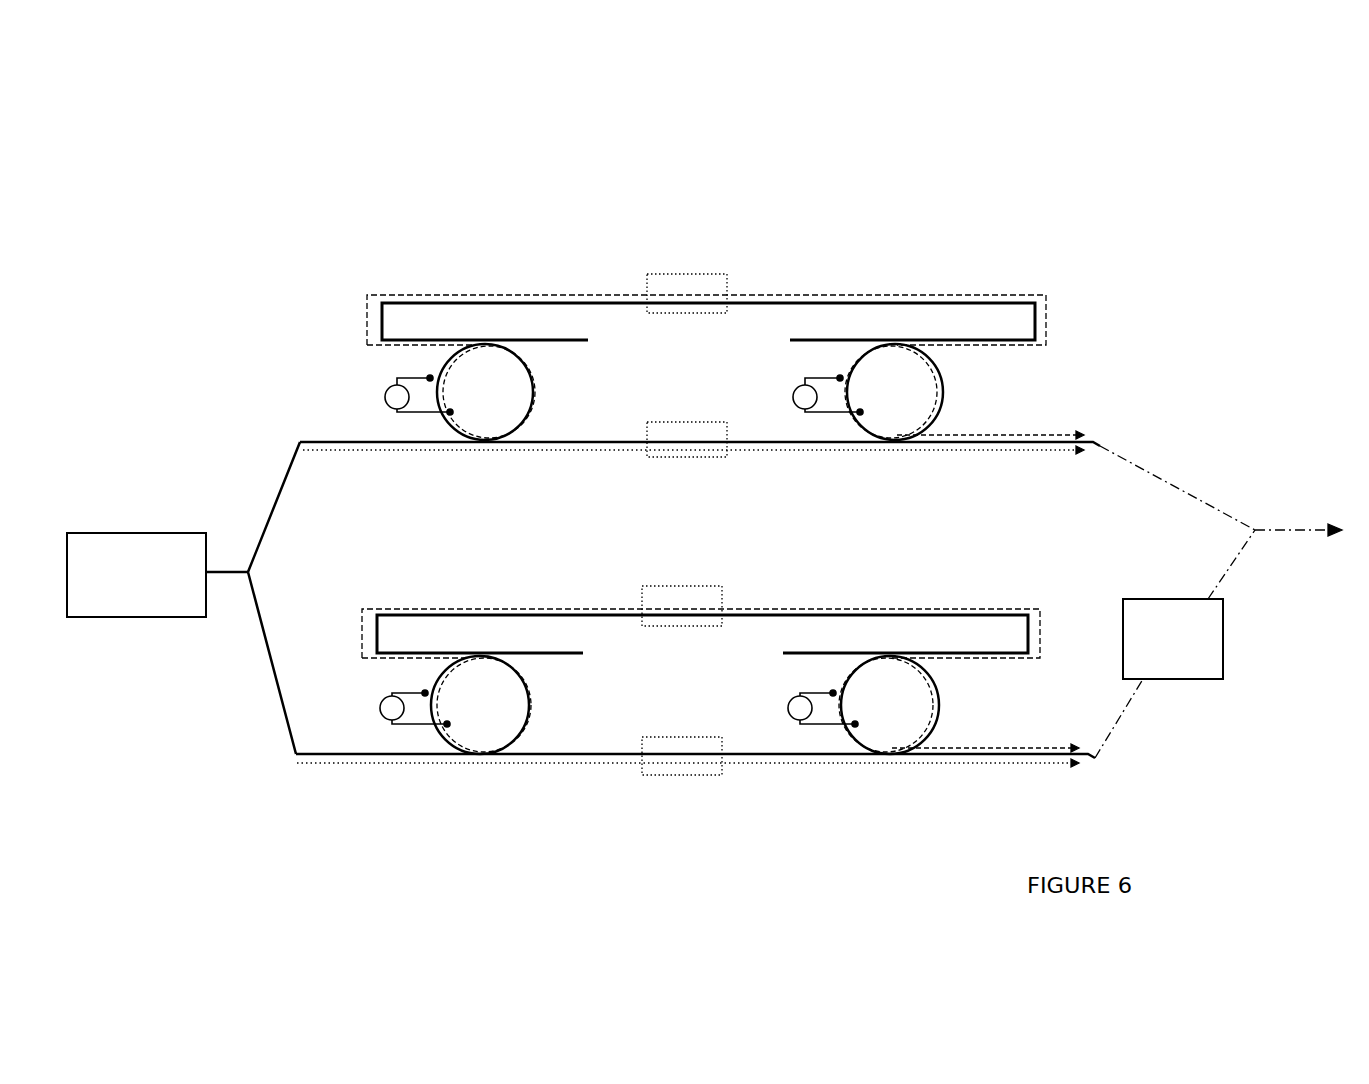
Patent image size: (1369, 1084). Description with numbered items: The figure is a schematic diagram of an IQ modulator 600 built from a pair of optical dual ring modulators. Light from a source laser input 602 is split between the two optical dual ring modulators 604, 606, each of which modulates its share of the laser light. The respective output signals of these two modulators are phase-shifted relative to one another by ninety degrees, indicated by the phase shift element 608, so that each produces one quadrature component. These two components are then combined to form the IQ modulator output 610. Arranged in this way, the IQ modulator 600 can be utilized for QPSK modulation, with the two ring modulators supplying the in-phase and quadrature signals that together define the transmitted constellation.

The IQ modulator 600 is at (609, 168).
The source laser input 602 is at (167, 533).
The optical dual ring modulator 604 is at (1126, 358).
The optical dual ring modulator 606 is at (1100, 681).
The 90 degree phase shift 608 is at (1223, 645).
The IQ modulator output 610 is at (1287, 530).